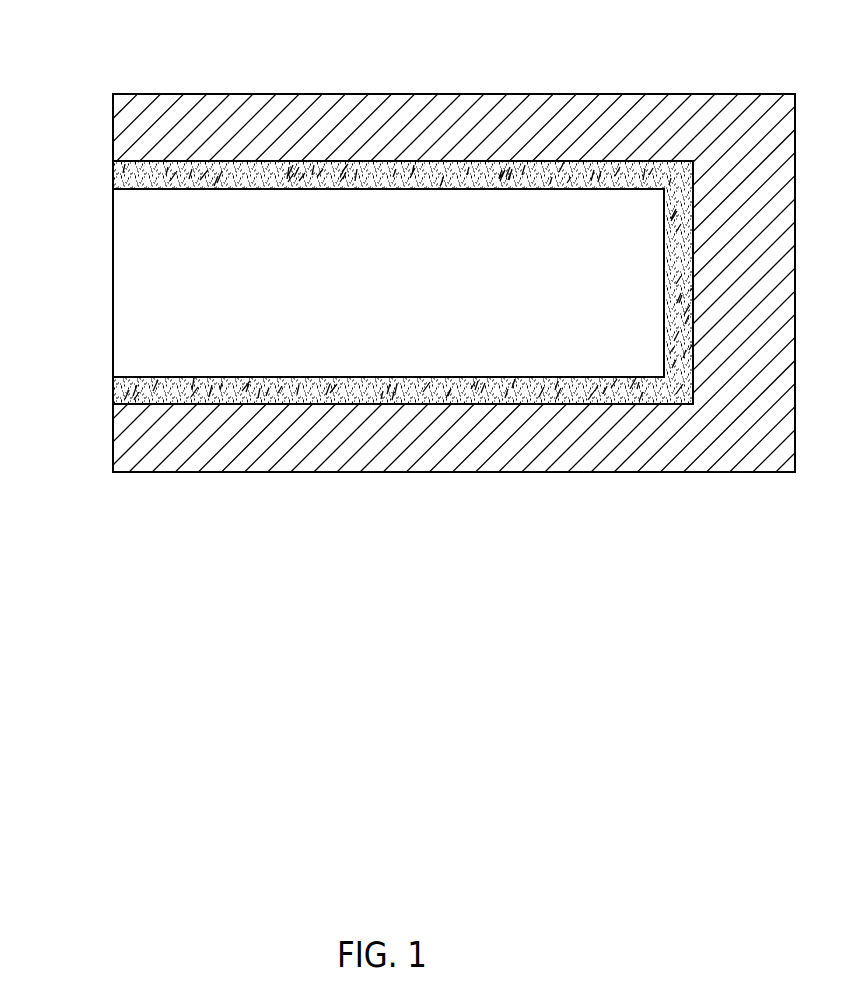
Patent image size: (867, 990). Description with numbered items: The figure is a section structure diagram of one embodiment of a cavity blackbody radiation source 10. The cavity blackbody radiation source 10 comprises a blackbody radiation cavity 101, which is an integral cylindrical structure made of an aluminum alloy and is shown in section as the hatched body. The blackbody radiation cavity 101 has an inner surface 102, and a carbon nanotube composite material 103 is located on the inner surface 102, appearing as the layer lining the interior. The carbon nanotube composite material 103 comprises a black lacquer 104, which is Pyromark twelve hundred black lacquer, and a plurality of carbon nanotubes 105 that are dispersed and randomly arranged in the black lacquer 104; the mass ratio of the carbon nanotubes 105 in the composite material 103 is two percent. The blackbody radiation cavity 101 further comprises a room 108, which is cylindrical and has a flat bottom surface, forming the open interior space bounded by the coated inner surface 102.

The cavity blackbody radiation source 10 is at (444, 56).
The blackbody radiation cavity 101 is at (682, 115).
The inner surface 102 is at (160, 390).
The carbon nanotube composite material 103 is at (404, 282).
The black lacquer 104 is at (310, 183).
The carbon nanotubes 105 is at (353, 182).
The room 108 is at (126, 277).